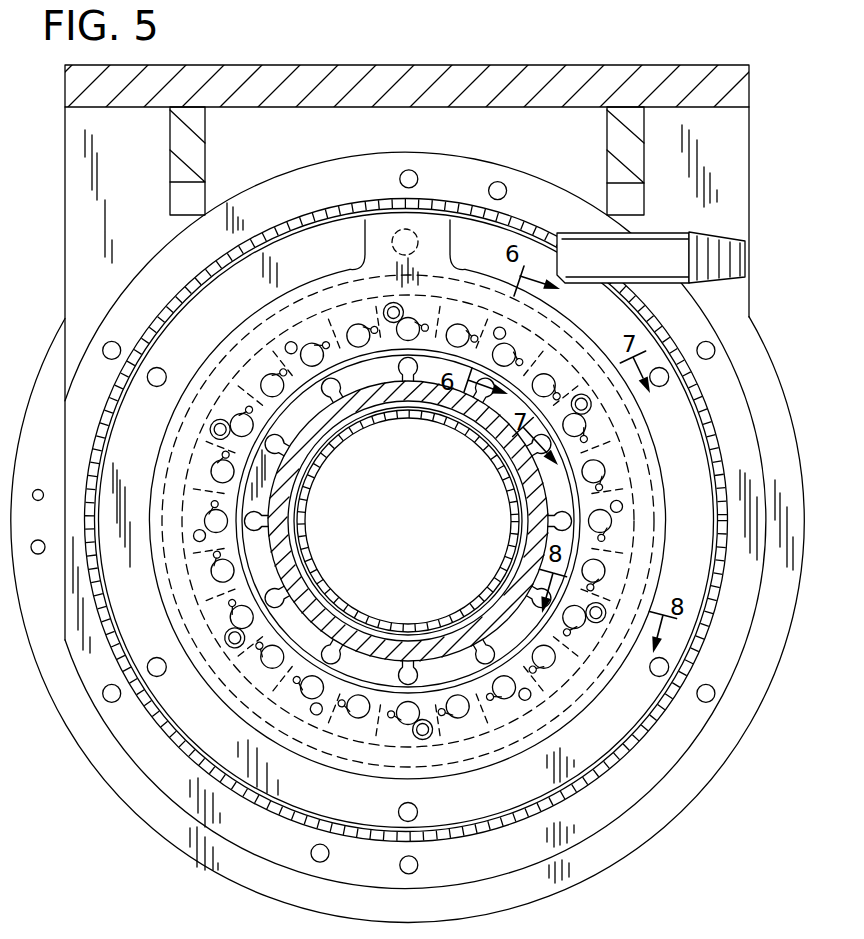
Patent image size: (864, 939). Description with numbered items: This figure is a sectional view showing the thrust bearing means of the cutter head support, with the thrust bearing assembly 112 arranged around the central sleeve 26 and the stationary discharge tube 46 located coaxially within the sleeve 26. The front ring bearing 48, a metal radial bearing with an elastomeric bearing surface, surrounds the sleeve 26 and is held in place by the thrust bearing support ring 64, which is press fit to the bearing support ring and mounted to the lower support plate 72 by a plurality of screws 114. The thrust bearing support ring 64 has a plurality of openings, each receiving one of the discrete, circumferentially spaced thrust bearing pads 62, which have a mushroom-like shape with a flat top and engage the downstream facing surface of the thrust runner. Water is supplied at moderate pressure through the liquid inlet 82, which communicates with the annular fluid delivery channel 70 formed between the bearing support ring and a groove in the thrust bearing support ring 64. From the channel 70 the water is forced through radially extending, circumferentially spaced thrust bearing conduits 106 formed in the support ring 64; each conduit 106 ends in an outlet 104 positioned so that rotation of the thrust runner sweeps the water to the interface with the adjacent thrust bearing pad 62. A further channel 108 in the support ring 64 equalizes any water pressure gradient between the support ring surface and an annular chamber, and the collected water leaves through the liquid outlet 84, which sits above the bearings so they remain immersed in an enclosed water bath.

The sleeve 26 is at (285, 557).
The stationary discharge tube 46 is at (340, 445).
The front ring bearing 48 is at (353, 673).
The thrust bearing pads 62 is at (600, 520).
The thrust bearing support ring 64 is at (592, 743).
The annular fluid delivery channel 70 is at (547, 712).
The lower support plate 72 is at (700, 142).
The liquid inlet 82 is at (418, 234).
The liquid outlet 84 is at (745, 258).
The outlet 104 is at (330, 340).
The thrust bearing conduits 106 is at (317, 318).
The channel 108 is at (486, 330).
The thrust bearing assembly 112 is at (692, 839).
The screws 114 is at (388, 305).